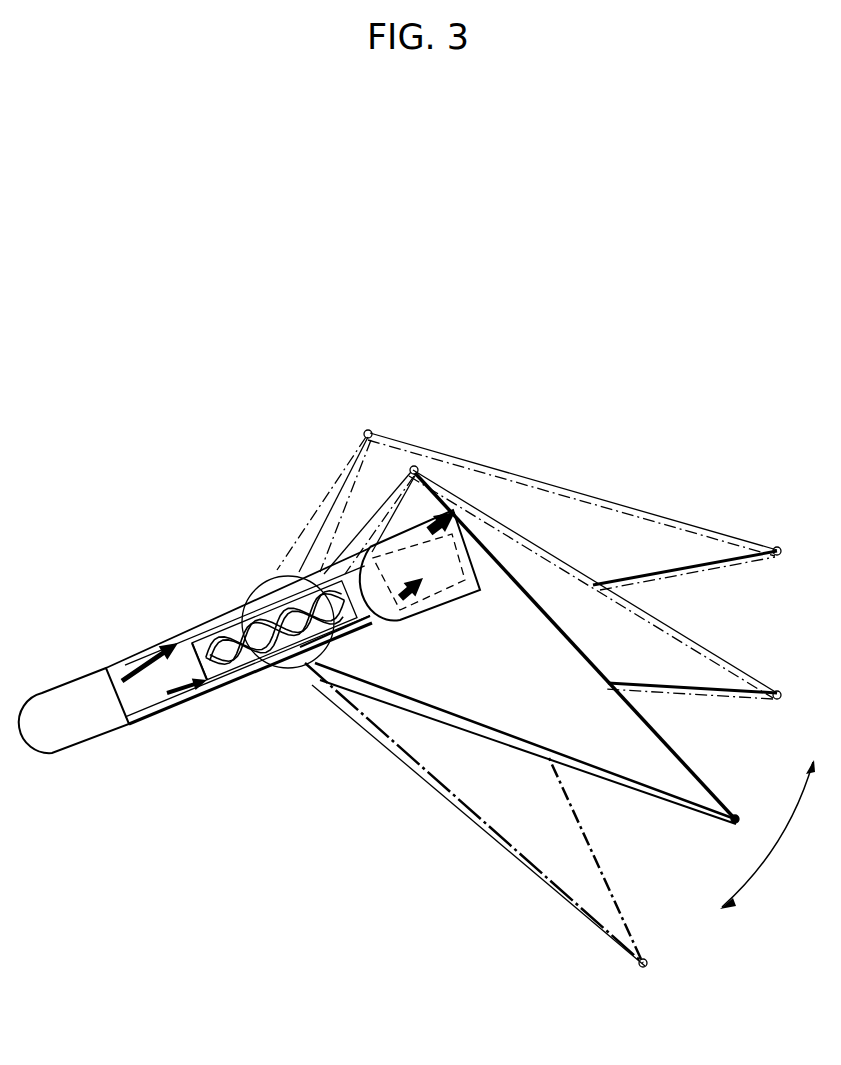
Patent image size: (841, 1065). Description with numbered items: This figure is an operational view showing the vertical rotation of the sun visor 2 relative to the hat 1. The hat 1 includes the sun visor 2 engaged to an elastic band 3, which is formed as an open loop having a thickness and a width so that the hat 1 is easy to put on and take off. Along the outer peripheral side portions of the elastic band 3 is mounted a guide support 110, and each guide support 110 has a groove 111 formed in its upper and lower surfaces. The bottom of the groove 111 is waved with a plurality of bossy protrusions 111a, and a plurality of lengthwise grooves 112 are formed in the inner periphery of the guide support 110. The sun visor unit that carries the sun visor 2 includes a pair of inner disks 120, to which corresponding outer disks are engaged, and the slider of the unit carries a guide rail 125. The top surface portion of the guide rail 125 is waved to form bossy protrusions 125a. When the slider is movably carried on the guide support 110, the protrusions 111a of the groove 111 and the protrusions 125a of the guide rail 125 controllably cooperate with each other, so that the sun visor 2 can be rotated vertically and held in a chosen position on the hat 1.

The hat 1 is at (248, 440).
The sun visor 2 is at (520, 586).
The elastic band 3 is at (158, 648).
The guide support 110 is at (220, 623).
The groove 111 is at (215, 682).
The bossy protrusions 111a is at (347, 627).
The lengthwise grooves 112 is at (200, 688).
The inner disk 120 is at (265, 582).
The guide rail 125 is at (287, 683).
The bossy protrusions 125a is at (263, 668).